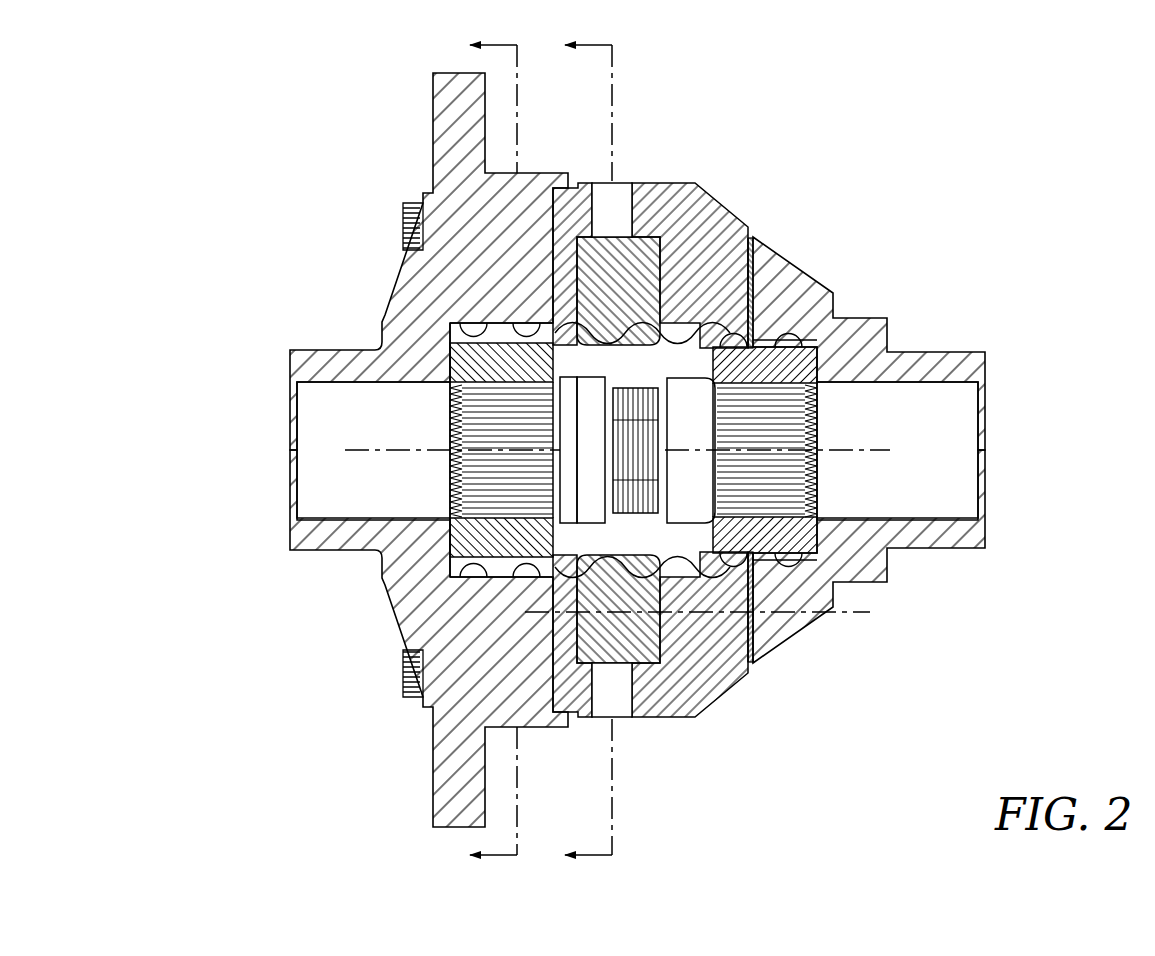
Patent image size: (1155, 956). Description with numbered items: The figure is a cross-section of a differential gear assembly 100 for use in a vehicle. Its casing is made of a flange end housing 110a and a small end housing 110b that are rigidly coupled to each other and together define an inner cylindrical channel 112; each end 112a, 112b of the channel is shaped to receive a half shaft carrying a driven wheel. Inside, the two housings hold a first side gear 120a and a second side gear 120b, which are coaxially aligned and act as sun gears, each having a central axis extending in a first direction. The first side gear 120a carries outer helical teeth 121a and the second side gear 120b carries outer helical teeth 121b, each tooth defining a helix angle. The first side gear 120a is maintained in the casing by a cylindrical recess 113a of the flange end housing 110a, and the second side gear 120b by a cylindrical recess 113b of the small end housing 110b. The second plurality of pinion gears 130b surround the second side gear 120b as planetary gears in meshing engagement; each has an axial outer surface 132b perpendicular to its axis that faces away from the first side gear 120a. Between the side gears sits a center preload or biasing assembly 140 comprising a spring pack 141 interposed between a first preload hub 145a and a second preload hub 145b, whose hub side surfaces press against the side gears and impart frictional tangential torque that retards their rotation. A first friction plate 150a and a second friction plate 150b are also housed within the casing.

The differential gear assembly 100 is at (1025, 117).
The flange end housing 110a is at (428, 777).
The small end housing 110b is at (820, 624).
The inner cylindrical channel 112 is at (902, 423).
The end of the channel 112a is at (350, 413).
The end of the channel 112b is at (948, 489).
The cylindrical recess 113a is at (452, 607).
The cylindrical recess 113b is at (786, 342).
The first side gear 120a is at (455, 552).
The second side gear 120b is at (773, 390).
The outer helical teeth 121a is at (472, 328).
The outer helical teeth 121b is at (713, 655).
The second plurality of pinion gears 130b is at (733, 243).
The axial outer surface 132b is at (754, 286).
The center preload or biasing assembly 140 is at (598, 332).
The spring pack 141 is at (641, 560).
The first preload hub 145a is at (416, 683).
The second preload hub 145b is at (763, 613).
The first friction plate 150a is at (444, 562).
The second friction plate 150b is at (754, 266).